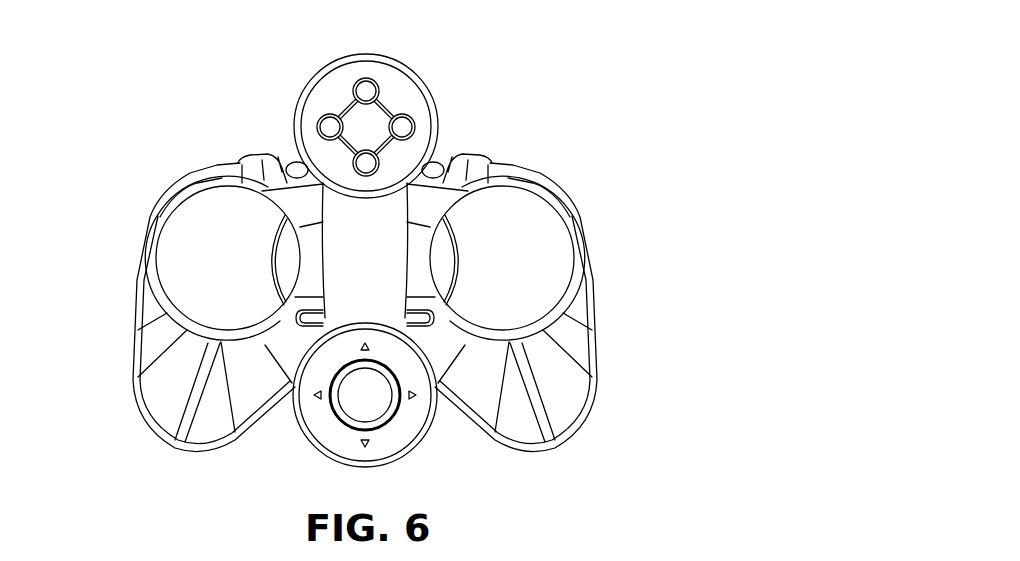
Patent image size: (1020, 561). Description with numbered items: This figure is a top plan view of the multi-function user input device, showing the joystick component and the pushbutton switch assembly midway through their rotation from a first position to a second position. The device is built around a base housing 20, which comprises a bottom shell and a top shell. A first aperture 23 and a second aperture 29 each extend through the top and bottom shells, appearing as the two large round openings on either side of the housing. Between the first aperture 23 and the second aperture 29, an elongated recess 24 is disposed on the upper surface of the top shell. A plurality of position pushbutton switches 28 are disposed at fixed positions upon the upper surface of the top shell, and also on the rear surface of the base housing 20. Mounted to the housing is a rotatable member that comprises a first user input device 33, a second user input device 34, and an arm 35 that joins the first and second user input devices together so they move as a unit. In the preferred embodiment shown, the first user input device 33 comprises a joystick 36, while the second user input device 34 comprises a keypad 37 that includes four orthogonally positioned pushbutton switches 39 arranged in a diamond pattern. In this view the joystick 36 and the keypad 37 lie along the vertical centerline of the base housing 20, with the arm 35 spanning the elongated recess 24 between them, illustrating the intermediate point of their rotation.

The base housing 20 is at (557, 400).
The first aperture 23 is at (212, 247).
The elongated recess 24 is at (415, 240).
The position pushbutton switches 28 is at (258, 158).
The second aperture 29 is at (522, 248).
The first user input device 33 is at (362, 420).
The second user input device 34 is at (397, 104).
The arm 35 is at (357, 298).
The joystick 36 is at (358, 398).
The keypad 37 is at (420, 132).
The pushbutton switches 39 is at (330, 127).